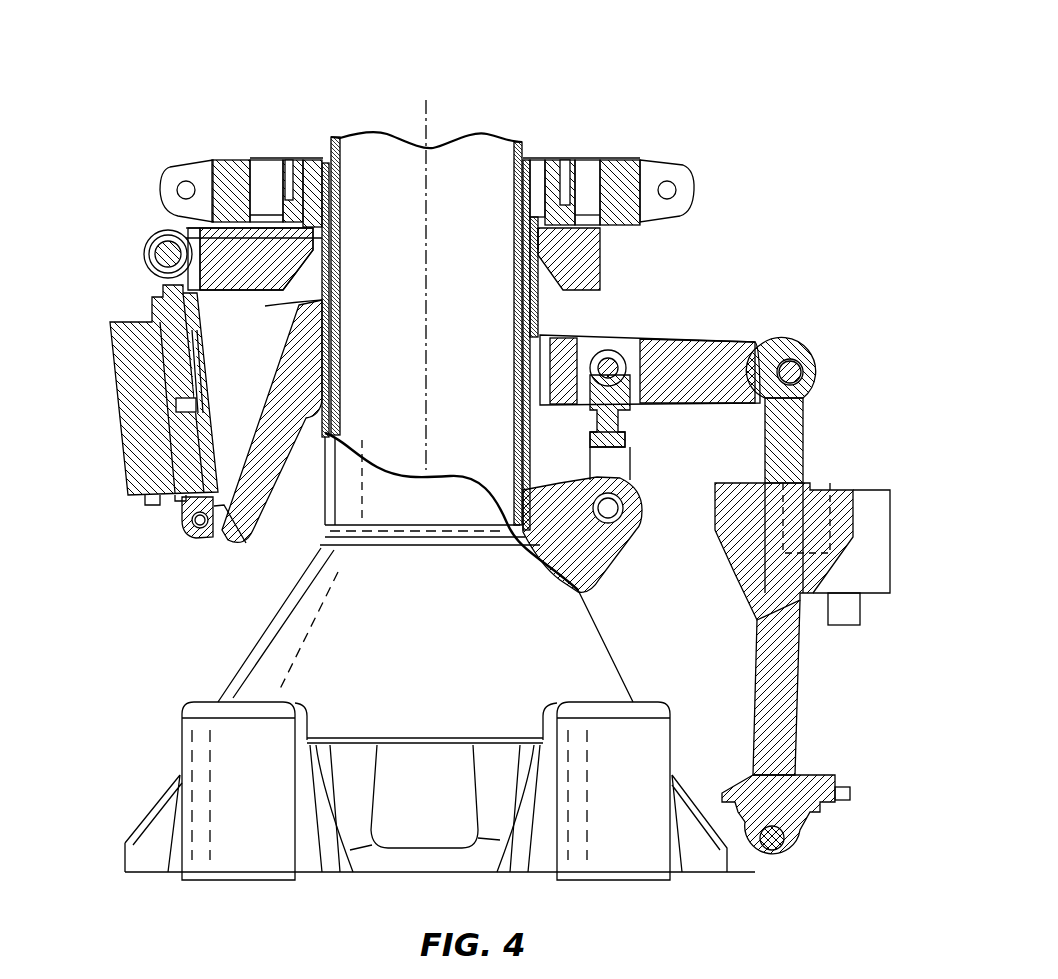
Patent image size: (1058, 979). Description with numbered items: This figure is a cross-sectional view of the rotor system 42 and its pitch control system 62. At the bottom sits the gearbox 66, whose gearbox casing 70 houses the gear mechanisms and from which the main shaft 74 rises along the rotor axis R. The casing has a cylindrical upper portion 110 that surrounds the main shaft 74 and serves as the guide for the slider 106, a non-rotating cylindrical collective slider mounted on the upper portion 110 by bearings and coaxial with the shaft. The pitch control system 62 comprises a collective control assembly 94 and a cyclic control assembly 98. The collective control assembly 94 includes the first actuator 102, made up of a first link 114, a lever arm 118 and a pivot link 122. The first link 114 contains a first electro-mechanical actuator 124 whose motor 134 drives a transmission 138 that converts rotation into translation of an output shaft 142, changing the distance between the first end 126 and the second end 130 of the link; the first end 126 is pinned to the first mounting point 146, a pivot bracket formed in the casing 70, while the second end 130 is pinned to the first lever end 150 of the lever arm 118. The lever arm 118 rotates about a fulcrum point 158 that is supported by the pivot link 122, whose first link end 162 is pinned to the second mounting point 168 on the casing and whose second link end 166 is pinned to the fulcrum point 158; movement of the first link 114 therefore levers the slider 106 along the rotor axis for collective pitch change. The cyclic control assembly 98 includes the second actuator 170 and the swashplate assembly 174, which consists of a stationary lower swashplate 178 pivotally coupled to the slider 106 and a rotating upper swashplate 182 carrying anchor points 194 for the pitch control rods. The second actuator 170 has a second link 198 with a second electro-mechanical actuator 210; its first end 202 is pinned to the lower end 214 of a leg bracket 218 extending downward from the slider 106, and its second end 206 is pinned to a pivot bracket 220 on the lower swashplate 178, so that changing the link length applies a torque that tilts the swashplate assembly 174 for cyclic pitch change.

The rotor system 42 is at (270, 62).
The pitch control system 62 is at (90, 80).
The gearbox 66 is at (213, 727).
The gearbox casing 70 is at (272, 657).
The main shaft 74 is at (525, 143).
The collective control assembly 94 is at (823, 247).
The cyclic control assembly 98 is at (67, 233).
The first actuator 102 is at (837, 663).
The slider 106 is at (300, 303).
The upper portion of the casing 110 is at (325, 165).
The first link 114 is at (752, 596).
The lever arm 118 is at (710, 337).
The pivot link 122 is at (627, 437).
The first electro-mechanical actuator 124 is at (863, 487).
The first end of the first link 126 is at (807, 830).
The second end of the first link 130 is at (810, 370).
The motor 134 is at (865, 517).
The transmission 138 is at (833, 547).
The output shaft 142 is at (797, 453).
The first mounting point 146 is at (772, 847).
The first lever end 150 is at (757, 350).
The fulcrum point 158 is at (598, 353).
The first link end 162 is at (620, 507).
The second link end 166 is at (628, 393).
The second mounting point 168 is at (587, 547).
The second actuator 170 is at (110, 462).
The swashplate assembly 174 is at (249, 148).
The lower swashplate 178 is at (592, 272).
The upper swashplate 182 is at (630, 163).
The anchor point 194 is at (172, 182).
The second link 198 is at (118, 350).
The first end of the second link 202 is at (180, 513).
The second end of the second link 206 is at (152, 268).
The second electro-mechanical actuator 210 is at (160, 385).
The lower end of the leg bracket 214 is at (243, 532).
The leg bracket 218 is at (270, 433).
The pivot bracket 220 is at (173, 225).